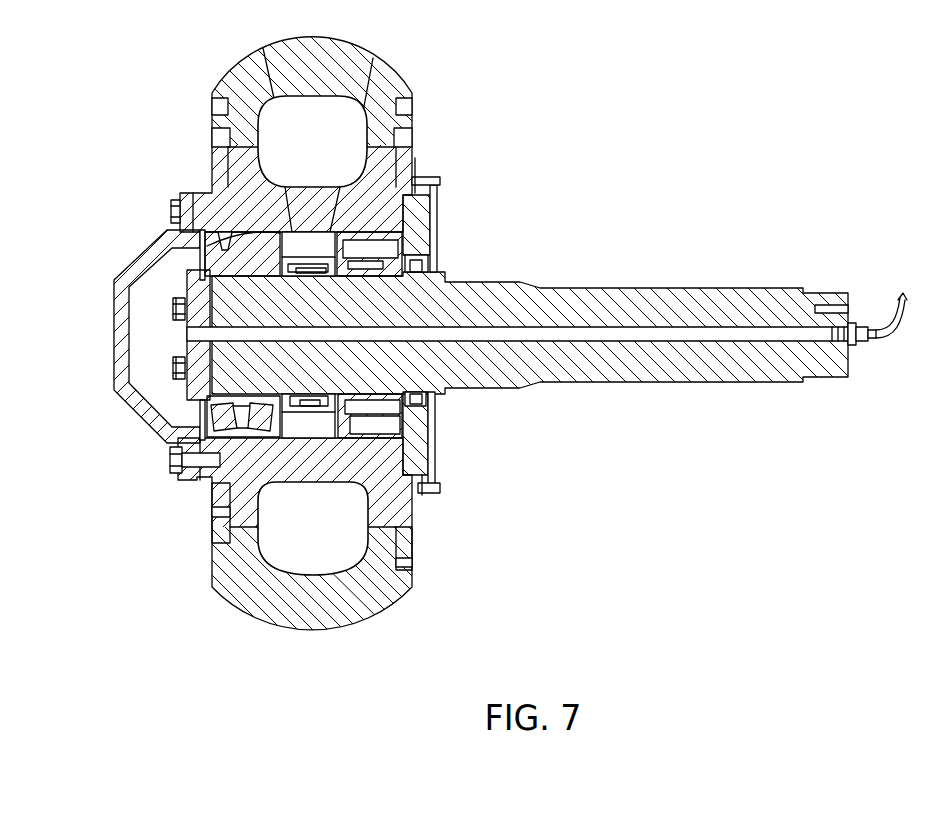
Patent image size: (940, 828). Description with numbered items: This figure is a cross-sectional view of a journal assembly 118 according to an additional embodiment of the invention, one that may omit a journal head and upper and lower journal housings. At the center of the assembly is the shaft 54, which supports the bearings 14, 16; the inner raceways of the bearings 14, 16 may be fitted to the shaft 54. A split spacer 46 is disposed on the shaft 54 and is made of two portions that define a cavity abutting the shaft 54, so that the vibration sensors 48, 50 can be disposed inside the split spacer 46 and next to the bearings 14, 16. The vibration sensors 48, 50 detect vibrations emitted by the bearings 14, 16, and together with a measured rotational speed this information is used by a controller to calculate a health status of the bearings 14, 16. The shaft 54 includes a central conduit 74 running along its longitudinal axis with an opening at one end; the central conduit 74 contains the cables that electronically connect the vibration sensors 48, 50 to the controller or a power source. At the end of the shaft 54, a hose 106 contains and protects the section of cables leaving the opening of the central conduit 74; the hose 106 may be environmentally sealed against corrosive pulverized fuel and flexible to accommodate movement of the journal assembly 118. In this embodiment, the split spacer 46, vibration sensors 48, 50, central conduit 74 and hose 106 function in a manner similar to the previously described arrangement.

The journal assembly 118 is at (158, 153).
The bearing 14 is at (423, 232).
The bearing 16 is at (200, 292).
The split spacer 46 is at (335, 232).
The vibration sensor 48 is at (306, 270).
The vibration sensor 50 is at (309, 396).
The shaft 54 is at (652, 290).
The central conduit 74 is at (548, 342).
The hose 106 is at (877, 340).